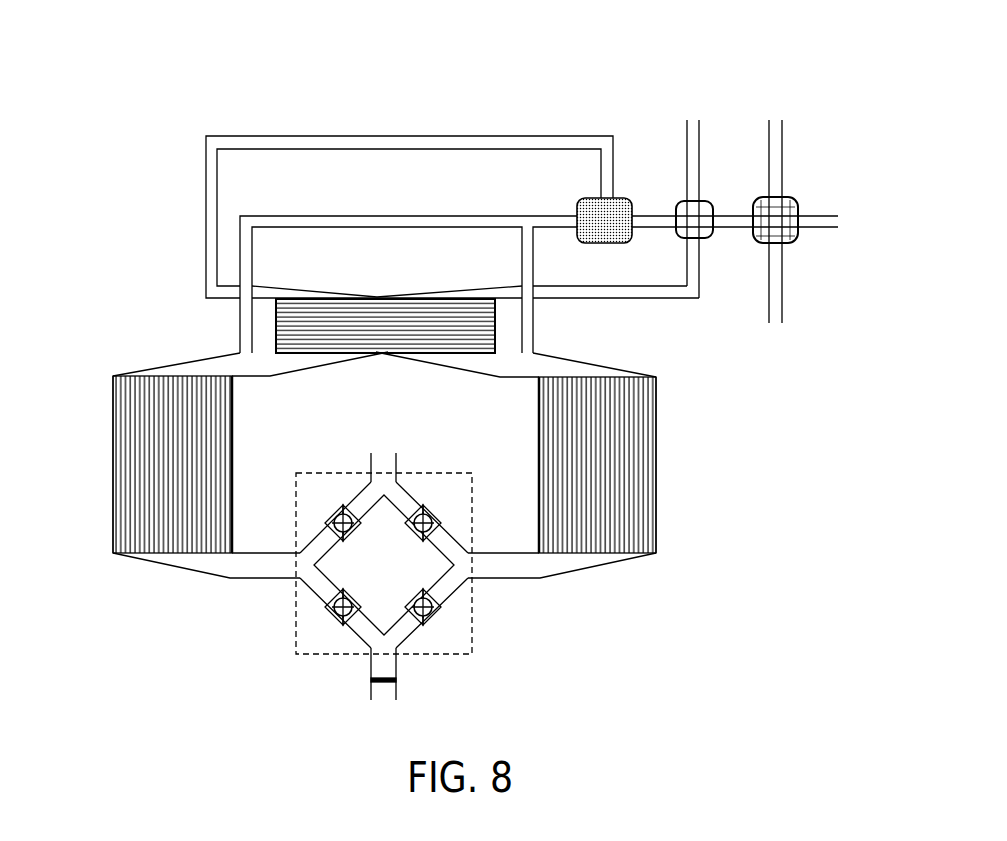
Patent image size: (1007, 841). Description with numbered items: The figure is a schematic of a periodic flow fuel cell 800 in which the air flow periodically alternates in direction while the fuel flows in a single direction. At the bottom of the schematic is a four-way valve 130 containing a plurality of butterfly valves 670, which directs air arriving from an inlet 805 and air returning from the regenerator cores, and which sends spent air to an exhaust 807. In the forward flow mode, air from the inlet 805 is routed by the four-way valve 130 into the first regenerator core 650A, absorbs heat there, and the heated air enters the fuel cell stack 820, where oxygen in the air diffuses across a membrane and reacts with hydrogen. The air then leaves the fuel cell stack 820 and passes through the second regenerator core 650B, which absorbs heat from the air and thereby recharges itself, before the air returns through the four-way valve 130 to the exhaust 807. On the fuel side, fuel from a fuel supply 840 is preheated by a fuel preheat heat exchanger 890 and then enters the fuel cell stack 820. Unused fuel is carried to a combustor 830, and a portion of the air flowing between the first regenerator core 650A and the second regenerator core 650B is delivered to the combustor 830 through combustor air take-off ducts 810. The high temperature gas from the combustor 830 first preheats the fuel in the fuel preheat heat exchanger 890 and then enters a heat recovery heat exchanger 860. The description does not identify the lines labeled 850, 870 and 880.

The periodic flow fuel cell 800 is at (530, 46).
The inlet 805 is at (398, 674).
The exhaust 807 is at (388, 463).
The combustor air take-off ducts 810 is at (247, 339).
The fuel cell stack 820 is at (285, 321).
The combustor 830 is at (613, 244).
The fuel supply 840 is at (695, 131).
The waveguide 850 is at (777, 142).
The heat recovery heat exchanger 860 is at (793, 200).
The waveguide 870 is at (815, 218).
The waveguide 880 is at (778, 285).
The fuel preheat heat exchanger 890 is at (702, 240).
The first regenerator core 650A is at (643, 437).
The second regenerator core 650B is at (125, 418).
The four-way valve 130 is at (472, 590).
The butterfly valves 670 is at (438, 612).